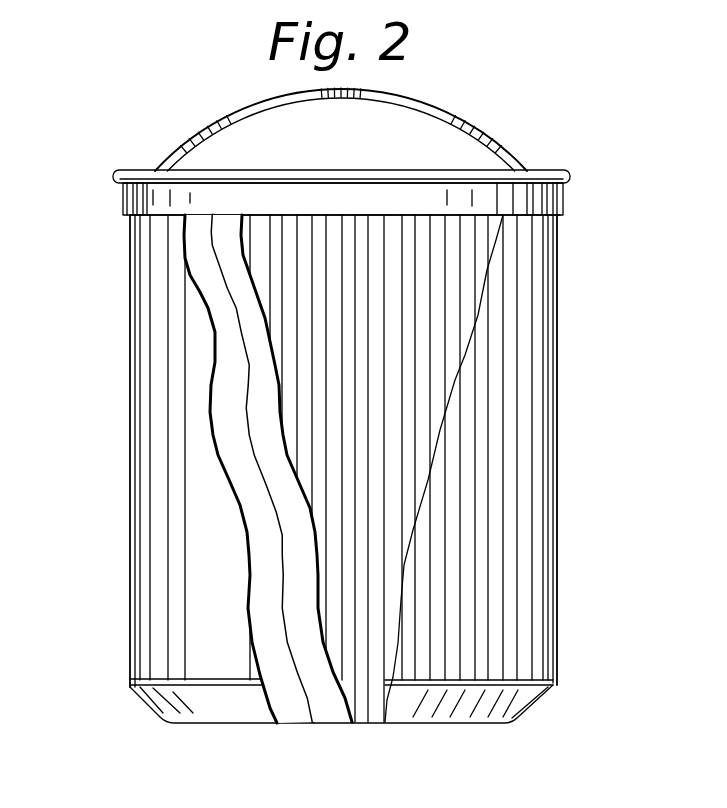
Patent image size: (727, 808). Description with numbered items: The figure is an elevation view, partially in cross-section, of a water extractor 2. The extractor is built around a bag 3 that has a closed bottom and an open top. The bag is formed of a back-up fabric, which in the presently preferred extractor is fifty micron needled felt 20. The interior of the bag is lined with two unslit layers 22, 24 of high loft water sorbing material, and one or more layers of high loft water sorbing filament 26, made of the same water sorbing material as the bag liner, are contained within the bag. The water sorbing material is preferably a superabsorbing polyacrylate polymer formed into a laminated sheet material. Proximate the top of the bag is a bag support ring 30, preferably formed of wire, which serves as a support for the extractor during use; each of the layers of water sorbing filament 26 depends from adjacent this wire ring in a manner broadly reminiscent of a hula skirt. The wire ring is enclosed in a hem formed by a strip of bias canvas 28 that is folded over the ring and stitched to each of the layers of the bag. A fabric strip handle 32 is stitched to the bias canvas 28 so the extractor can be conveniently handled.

The water extractor 2 is at (128, 322).
The bag 3 is at (128, 582).
The needled felt 20 is at (210, 708).
The unslit layer of high loft water sorbing material 22 is at (297, 708).
The unslit layer of high loft water sorbing material 24 is at (335, 713).
The high loft water sorbing filament 26 is at (415, 452).
The bias canvas strip 28 is at (123, 197).
The bag support ring 30 is at (122, 170).
The fabric strip handle 32 is at (220, 118).